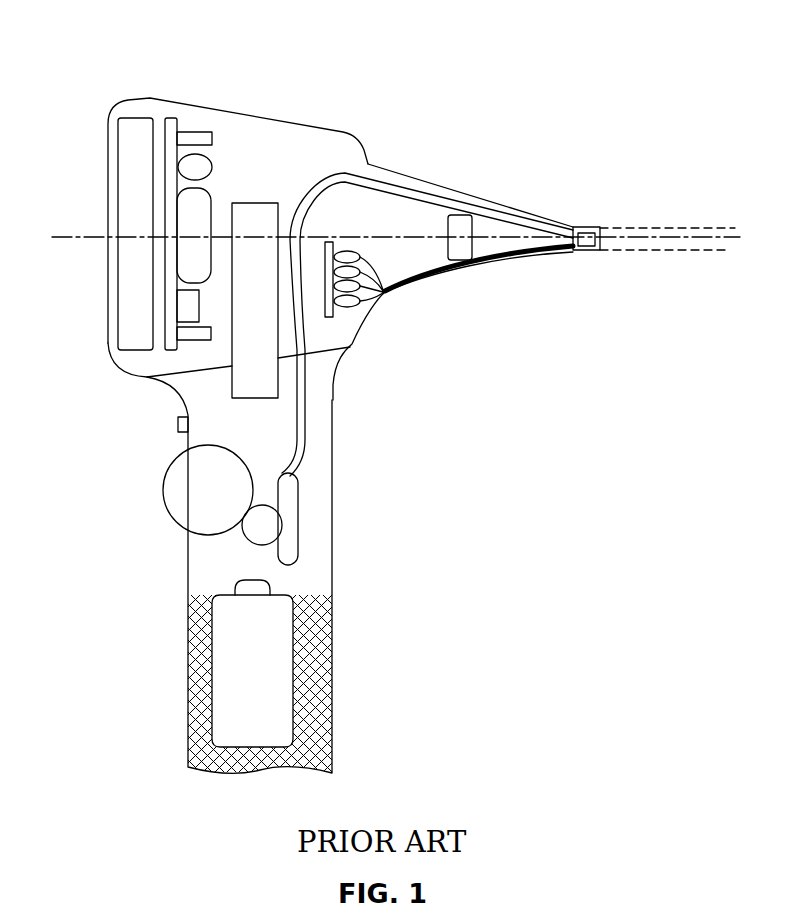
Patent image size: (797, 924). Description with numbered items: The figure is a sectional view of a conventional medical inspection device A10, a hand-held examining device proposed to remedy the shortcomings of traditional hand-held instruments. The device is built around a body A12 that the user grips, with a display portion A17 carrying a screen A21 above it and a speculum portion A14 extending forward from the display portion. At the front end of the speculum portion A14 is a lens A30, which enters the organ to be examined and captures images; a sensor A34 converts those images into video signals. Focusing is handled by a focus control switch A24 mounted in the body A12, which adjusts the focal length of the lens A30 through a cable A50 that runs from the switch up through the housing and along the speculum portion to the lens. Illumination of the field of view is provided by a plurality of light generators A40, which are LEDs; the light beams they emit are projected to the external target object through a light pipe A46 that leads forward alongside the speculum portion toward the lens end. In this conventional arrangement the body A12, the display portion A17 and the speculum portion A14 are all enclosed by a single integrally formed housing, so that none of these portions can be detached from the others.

The medical inspection device A10 is at (97, 73).
The body A12 is at (188, 565).
The speculum portion A14 is at (415, 142).
The display portion A17 is at (308, 127).
The screen A21 is at (108, 263).
The focus control switch A24 is at (175, 495).
The lens A30 is at (608, 232).
The sensor A34 is at (460, 215).
The light generators A40 is at (353, 303).
The light pipe A46 is at (515, 262).
The cable A50 is at (310, 196).